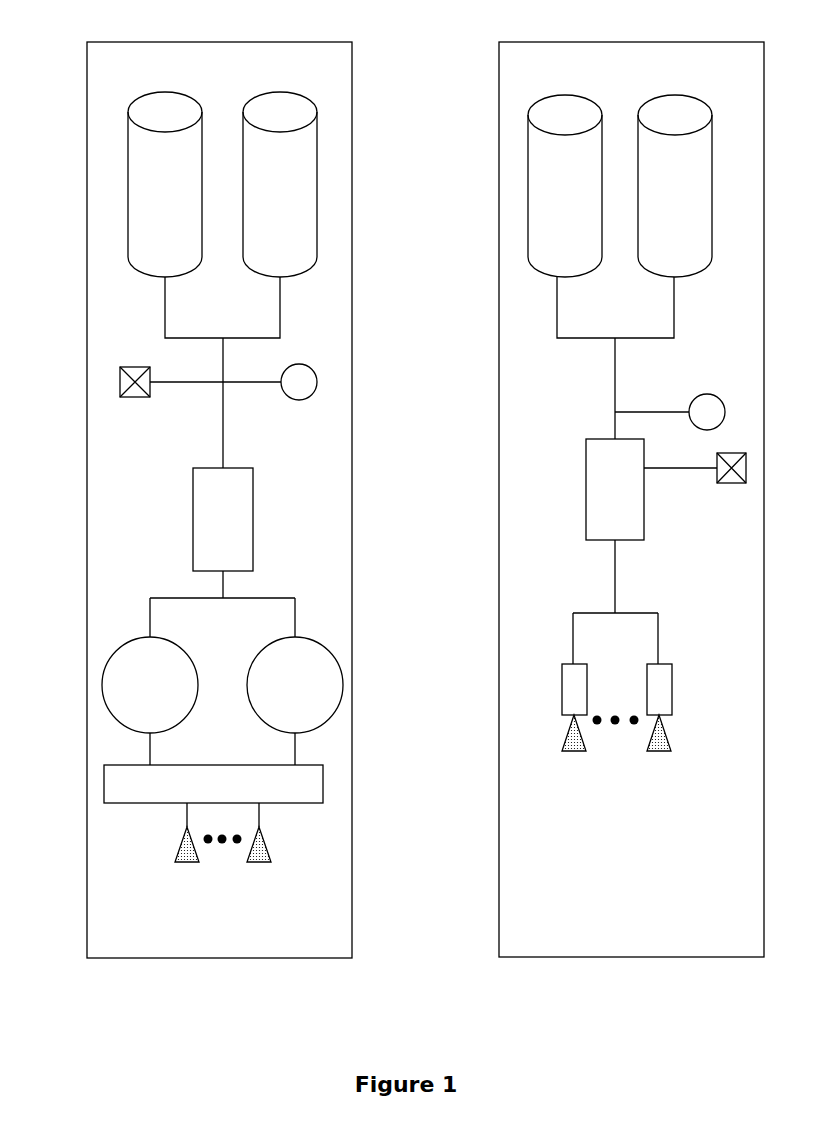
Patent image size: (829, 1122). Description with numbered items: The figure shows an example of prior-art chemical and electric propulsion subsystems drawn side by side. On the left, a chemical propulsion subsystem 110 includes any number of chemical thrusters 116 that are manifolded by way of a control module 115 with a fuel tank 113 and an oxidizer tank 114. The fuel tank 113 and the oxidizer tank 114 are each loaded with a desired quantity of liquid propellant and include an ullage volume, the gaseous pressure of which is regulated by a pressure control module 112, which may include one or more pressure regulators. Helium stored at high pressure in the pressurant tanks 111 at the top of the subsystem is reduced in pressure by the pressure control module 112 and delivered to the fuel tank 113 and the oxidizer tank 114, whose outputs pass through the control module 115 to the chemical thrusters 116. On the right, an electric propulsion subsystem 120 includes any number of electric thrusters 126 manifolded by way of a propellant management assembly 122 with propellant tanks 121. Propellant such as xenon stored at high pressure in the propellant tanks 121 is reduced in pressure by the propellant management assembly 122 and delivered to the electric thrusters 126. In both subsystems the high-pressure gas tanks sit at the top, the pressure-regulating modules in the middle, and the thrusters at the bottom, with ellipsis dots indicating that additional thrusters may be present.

The chemical propulsion subsystem 110 is at (114, 22).
The pressurant tanks 111 is at (150, 205).
The pressure control module 112 is at (208, 527).
The fuel tank 113 is at (135, 706).
The oxidizer tank 114 is at (280, 706).
The control module 115 is at (198, 792).
The chemical thrusters 116 is at (178, 843).
The electric propulsion subsystem 120 is at (479, 23).
The propellant tanks 121 is at (550, 222).
The propellant management assembly (PMA) 122 is at (600, 499).
The electric thrusters 126 is at (562, 706).